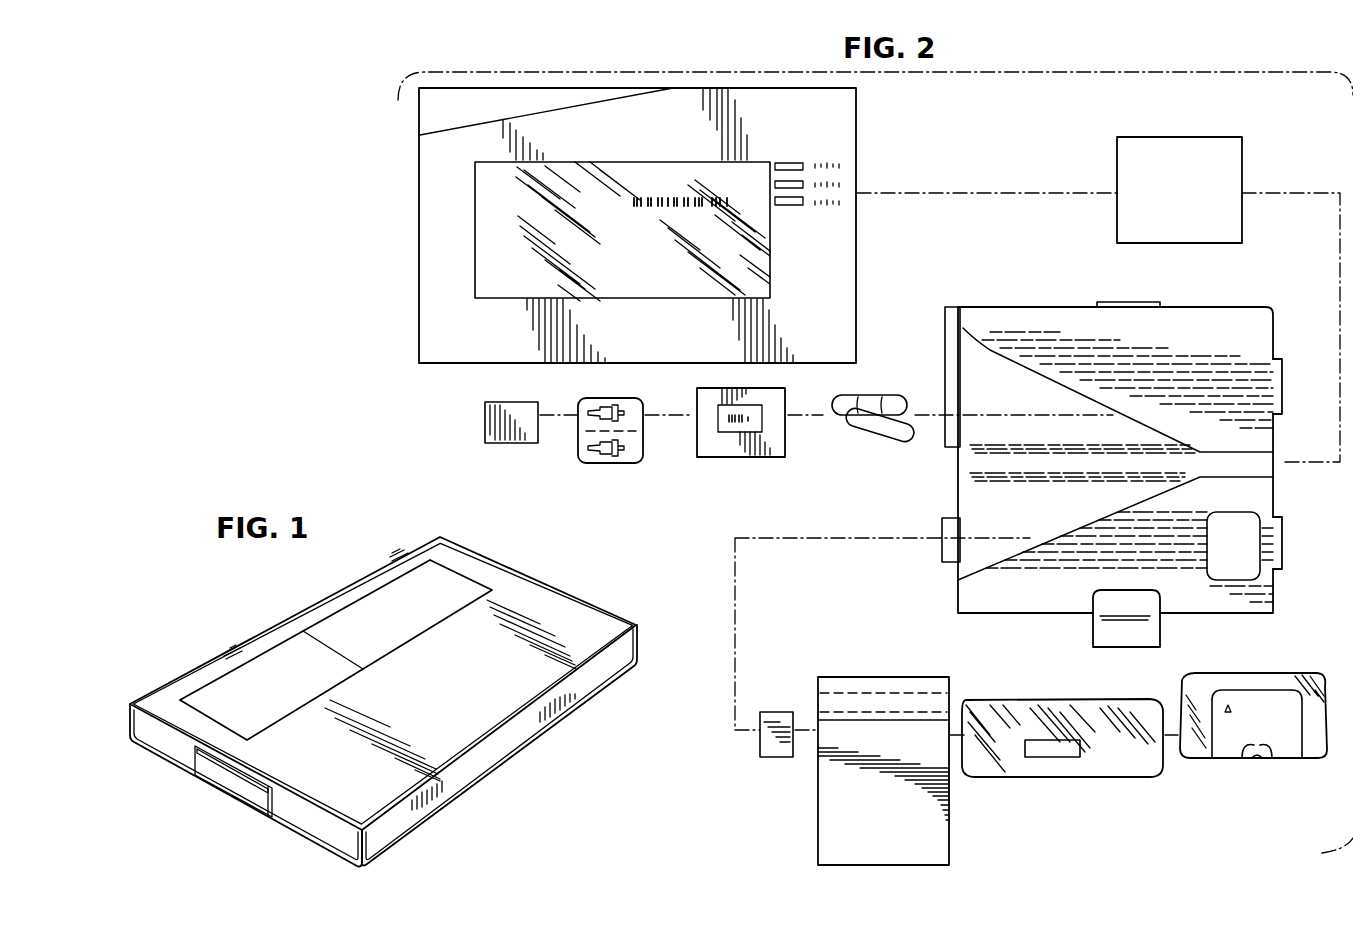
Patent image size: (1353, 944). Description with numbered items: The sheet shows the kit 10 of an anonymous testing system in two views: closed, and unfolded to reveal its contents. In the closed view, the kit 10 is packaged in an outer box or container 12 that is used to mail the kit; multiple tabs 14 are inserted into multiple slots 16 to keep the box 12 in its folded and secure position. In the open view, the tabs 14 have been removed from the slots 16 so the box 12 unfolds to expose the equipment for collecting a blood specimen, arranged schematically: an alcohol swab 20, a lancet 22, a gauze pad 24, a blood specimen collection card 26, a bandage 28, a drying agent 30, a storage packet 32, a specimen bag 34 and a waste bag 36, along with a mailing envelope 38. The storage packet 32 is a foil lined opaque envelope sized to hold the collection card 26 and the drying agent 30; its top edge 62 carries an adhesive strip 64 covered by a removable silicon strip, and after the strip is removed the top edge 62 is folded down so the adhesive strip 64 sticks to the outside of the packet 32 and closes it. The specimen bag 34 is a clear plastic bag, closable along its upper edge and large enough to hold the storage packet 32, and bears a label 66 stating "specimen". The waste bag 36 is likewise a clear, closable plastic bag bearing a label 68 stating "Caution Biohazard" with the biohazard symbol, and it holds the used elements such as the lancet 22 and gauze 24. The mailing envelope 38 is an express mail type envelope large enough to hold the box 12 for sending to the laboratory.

In FIG. 1, the kit 10 is at (290, 607).
In FIG. 2, the kit 10 is at (393, 91).
In FIG. 1, the outer box or container 12 is at (508, 579).
In FIG. 2, the outer box or container 12 is at (1280, 284).
In FIG. 1, the tabs 14 is at (239, 789).
In FIG. 2, the tabs 14 is at (955, 312).
In FIG. 1, the slots 16 is at (258, 790).
In FIG. 2, the slots 16 is at (1153, 298).
In FIG. 2, the alcohol swab 20 is at (498, 445).
In FIG. 2, the lancet 22 is at (632, 458).
In FIG. 2, the gauze pad 24 is at (727, 452).
In FIG. 2, the blood specimen collection card 26 is at (1232, 163).
In FIG. 2, the bandage 28 is at (875, 395).
In FIG. 2, the drying agent (desiccant) 30 is at (770, 752).
In FIG. 2, the storage packet 32 is at (828, 822).
In FIG. 2, the specimen bag 34 is at (1010, 765).
In FIG. 2, the waste bag 36 is at (1202, 752).
In FIG. 2, the mailing envelope 38 is at (428, 342).
In FIG. 2, the top edge 62 is at (913, 676).
In FIG. 2, the adhesive strip 64 is at (933, 692).
In FIG. 2, the label 66 is at (1073, 758).
In FIG. 2, the label 68 is at (1287, 757).